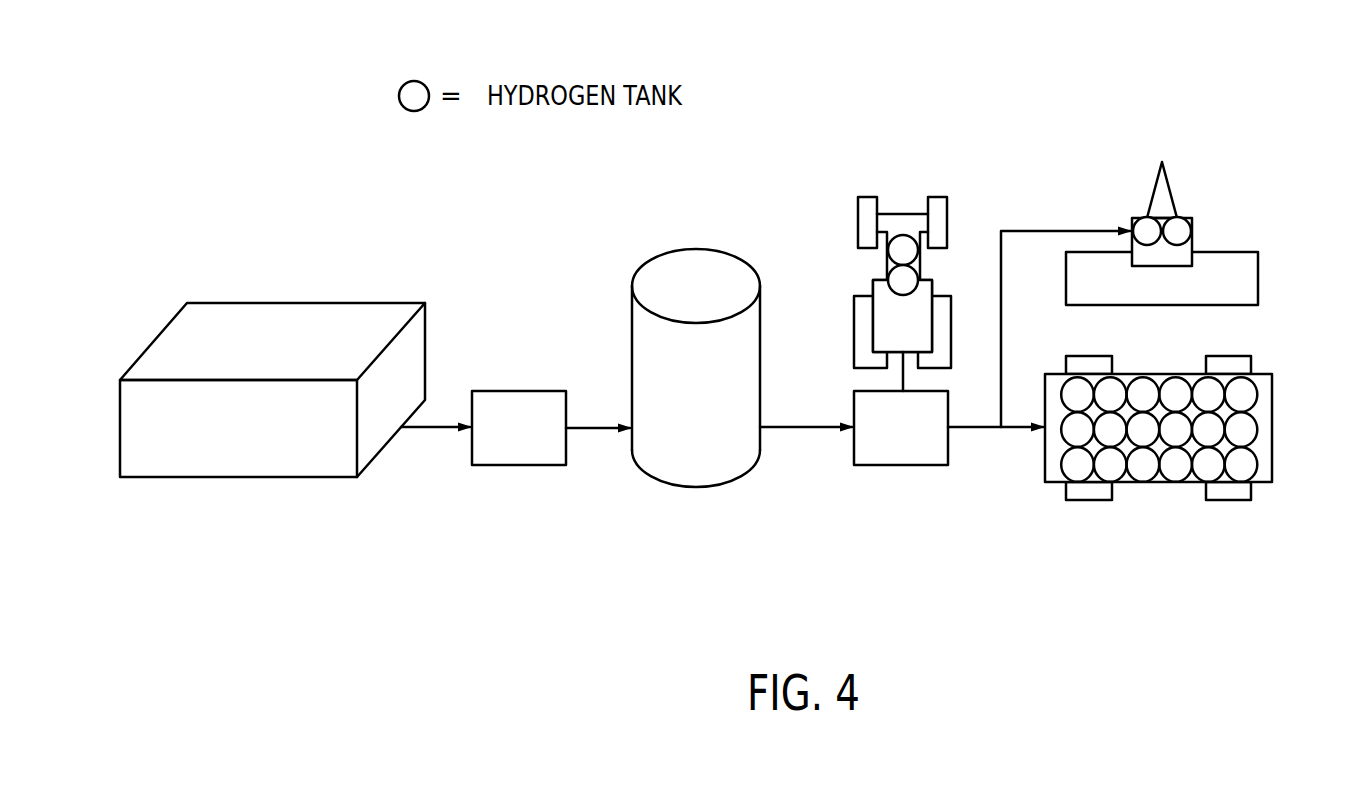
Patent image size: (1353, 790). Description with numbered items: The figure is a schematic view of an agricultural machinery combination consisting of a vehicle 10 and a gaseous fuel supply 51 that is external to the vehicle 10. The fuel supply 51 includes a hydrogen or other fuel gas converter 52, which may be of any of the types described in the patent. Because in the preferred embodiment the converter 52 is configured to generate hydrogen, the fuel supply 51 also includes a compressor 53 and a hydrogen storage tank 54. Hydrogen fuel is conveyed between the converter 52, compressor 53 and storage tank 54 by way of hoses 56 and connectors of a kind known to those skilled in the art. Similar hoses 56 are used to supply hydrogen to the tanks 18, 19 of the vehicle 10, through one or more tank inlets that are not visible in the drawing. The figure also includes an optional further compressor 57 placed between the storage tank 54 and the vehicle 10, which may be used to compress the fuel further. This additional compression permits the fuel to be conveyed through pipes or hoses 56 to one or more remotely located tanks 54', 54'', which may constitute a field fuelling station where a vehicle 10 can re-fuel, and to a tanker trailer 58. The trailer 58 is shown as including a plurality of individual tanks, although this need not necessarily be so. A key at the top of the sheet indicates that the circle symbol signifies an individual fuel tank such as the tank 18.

The vehicle 10 is at (903, 220).
The tank 18 is at (898, 255).
The tank 19 is at (900, 286).
The gaseous fuel supply 51 is at (321, 572).
The fuel gas converter 52 is at (183, 452).
The compressor 53 is at (515, 412).
The hydrogen storage tank 54 is at (696, 394).
The remotely located tank 54' is at (1115, 210).
The remotely located tank 54'' is at (1211, 210).
The hoses 56 is at (428, 425).
The further compressor 57 is at (897, 442).
The tanker trailer 58 is at (1260, 443).